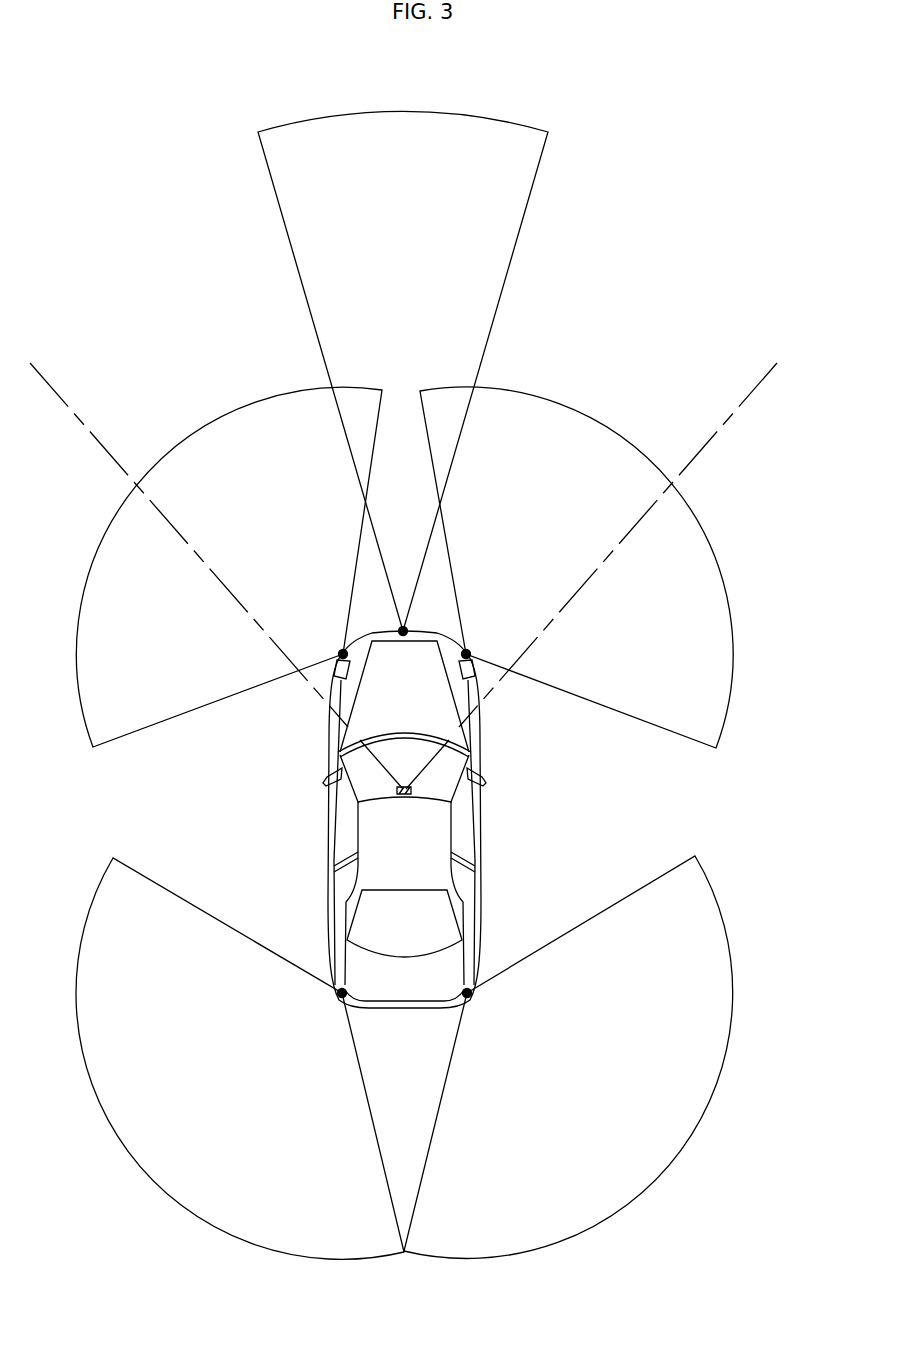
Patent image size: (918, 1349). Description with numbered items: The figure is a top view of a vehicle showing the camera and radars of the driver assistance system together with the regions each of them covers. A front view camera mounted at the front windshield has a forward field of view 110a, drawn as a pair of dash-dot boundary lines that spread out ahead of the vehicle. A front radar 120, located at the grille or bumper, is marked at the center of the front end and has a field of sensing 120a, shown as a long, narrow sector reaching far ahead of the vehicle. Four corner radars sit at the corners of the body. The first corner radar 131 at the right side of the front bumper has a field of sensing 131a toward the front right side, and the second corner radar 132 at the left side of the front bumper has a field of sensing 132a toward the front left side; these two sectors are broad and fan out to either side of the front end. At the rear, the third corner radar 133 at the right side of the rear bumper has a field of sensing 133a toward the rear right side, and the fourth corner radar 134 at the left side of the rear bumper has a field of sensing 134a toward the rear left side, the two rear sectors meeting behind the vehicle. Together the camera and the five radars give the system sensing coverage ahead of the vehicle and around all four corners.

The forward field of view 110a is at (735, 413).
The front radar 120 is at (403, 631).
The field of sensing 120a is at (492, 250).
The first corner radar 131 is at (466, 654).
The field of sensing 131a is at (607, 443).
The second corner radar 132 is at (343, 654).
The field of sensing 132a is at (202, 443).
The third corner radar 133 is at (467, 993).
The field of sensing 133a is at (680, 1135).
The fourth corner radar 134 is at (342, 993).
The field of sensing 134a is at (128, 1133).